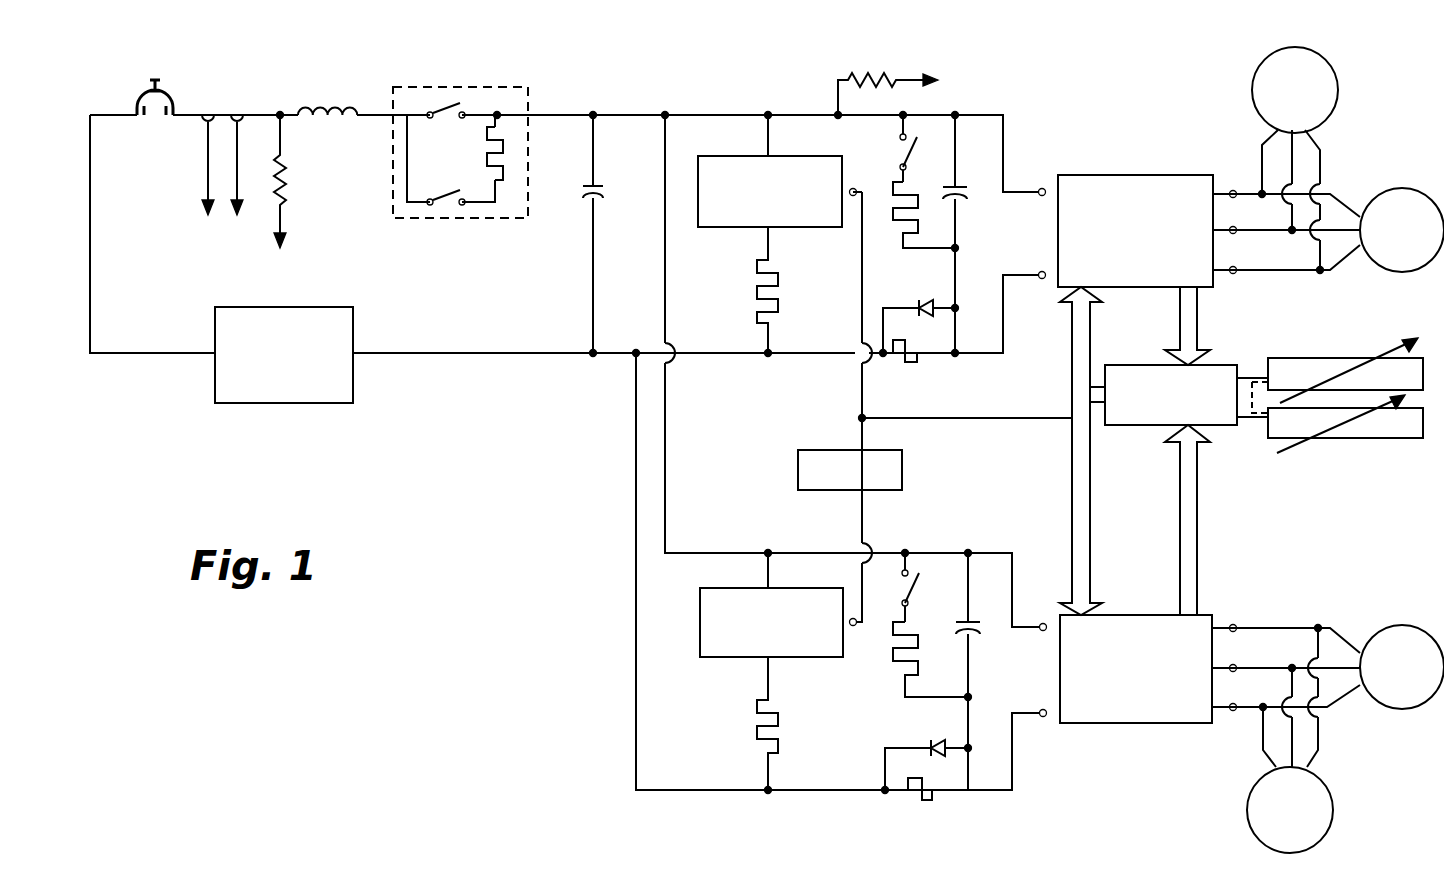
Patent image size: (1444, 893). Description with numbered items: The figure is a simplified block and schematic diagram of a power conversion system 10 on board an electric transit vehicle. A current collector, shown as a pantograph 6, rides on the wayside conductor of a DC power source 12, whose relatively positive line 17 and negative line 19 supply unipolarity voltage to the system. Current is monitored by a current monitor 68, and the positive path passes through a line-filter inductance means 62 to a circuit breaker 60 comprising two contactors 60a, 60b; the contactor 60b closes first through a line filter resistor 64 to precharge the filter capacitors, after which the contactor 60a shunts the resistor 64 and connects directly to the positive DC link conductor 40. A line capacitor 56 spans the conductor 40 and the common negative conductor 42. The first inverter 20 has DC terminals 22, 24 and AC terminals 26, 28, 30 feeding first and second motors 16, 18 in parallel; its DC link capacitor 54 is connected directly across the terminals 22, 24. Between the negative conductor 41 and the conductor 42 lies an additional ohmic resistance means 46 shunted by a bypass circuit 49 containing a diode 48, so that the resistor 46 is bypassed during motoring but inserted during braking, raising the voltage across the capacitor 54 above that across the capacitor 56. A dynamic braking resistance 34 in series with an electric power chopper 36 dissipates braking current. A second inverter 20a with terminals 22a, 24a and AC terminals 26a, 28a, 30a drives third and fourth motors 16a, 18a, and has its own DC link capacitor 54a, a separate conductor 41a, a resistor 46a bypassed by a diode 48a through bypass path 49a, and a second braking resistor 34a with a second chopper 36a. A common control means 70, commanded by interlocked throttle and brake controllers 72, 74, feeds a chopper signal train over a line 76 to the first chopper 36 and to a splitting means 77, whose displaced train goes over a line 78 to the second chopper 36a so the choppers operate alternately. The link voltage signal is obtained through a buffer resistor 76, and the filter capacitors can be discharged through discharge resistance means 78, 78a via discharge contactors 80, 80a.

The pantograph 6 is at (143, 98).
The power conversion system 10 is at (1116, 72).
The DC power source 12 is at (316, 307).
The first motor 16 is at (1405, 188).
The third AC motor 16a is at (1400, 625).
The positive line 17 is at (90, 180).
The second motor 18 is at (1338, 88).
The fourth AC motor 18a is at (1333, 805).
The negative line 19 is at (416, 353).
The controllable converter 20 is at (1140, 175).
The second inverter 20a is at (1136, 670).
The DC terminal 22 is at (1042, 186).
The positive DC terminal 22a is at (1043, 622).
The DC terminal 24 is at (1042, 280).
The negative DC terminal 24a is at (1043, 718).
The AC terminal 26 is at (1236, 190).
The AC terminal 26a is at (1233, 622).
The AC terminal 28 is at (1236, 236).
The AC terminal 28a is at (1234, 664).
The AC terminal 30 is at (1235, 275).
The AC terminal 30a is at (1233, 712).
The dynamic braking resistance 34 is at (757, 292).
The dynamic braking resistor 34a is at (780, 732).
The electric power chopper 36 is at (727, 228).
The second electric power chopper 36a is at (700, 657).
The conductor 40 is at (621, 113).
The negative conductor 41 is at (1003, 340).
The separate conductor 41a is at (1012, 770).
The negative conductor 42 is at (612, 350).
The additional ohmic resistance means 46 is at (916, 370).
The second additional ohmic resistance means 46a is at (932, 800).
The diode 48 is at (928, 304).
The diode 48a is at (940, 742).
The bypass circuit 49 is at (903, 290).
The diode conductor 49a is at (897, 745).
The first capacitance means 54 is at (960, 198).
The second DC link capacitor 54a is at (978, 638).
The second capacitance means 56 is at (608, 197).
The electric circuit breaker 60 is at (493, 130).
The contactor 60a is at (452, 118).
The contactor 60b is at (442, 198).
The line-filter inductance means 62 is at (325, 110).
The line filter resistor 64 is at (508, 143).
The current monitor 68 is at (228, 112).
The control means 70 is at (1230, 428).
The throttle controller 72 is at (1330, 358).
The brake controller 74 is at (1358, 440).
The buffer resistor 76 is at (888, 80).
The splitting means 77 is at (902, 470).
The discharge resistance means 78 is at (893, 214).
The dynamic braking resistor 78a is at (890, 655).
The discharge contactor 80 is at (898, 150).
The braking switch 80a is at (915, 598).